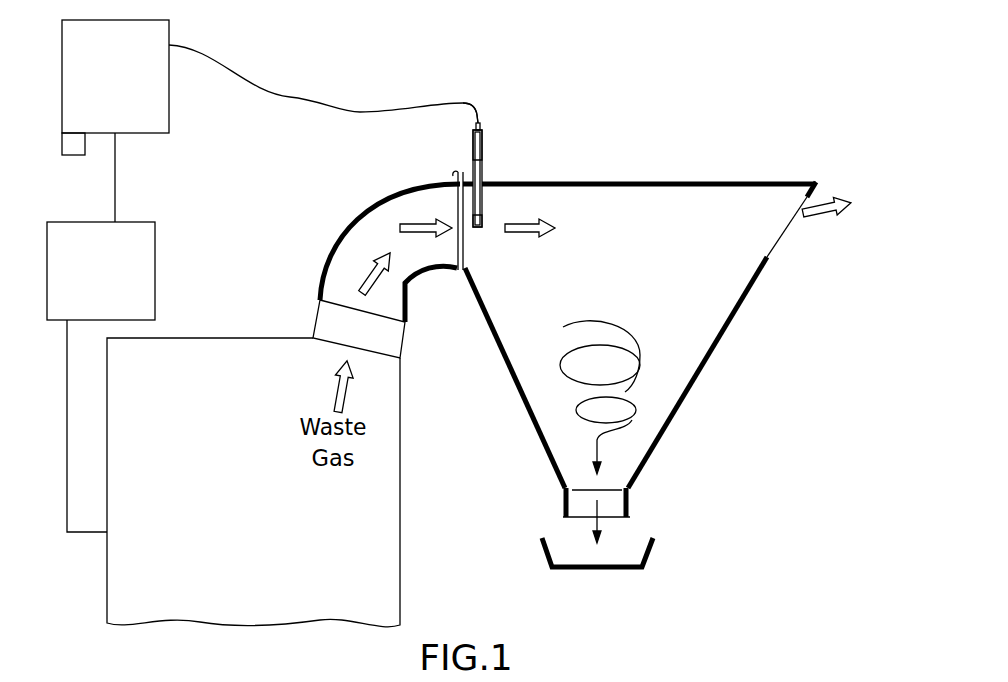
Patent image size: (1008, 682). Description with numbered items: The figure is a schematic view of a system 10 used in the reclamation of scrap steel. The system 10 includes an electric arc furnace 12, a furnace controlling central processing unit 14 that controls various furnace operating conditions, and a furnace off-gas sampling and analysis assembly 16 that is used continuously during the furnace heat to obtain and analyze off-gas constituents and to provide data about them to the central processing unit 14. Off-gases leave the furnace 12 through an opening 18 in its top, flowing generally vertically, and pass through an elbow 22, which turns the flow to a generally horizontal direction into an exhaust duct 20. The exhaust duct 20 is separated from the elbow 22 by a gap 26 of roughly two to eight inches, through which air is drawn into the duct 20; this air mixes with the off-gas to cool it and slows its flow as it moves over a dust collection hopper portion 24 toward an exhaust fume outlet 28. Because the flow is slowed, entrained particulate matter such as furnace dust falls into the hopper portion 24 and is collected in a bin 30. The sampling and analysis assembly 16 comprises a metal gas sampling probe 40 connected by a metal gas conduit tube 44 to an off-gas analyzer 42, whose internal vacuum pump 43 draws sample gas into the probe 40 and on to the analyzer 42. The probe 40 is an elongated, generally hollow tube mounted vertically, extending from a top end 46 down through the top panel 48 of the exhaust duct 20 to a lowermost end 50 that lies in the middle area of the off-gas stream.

The system 10 is at (820, 412).
The electric arc furnace 12 is at (232, 562).
The furnace controlling central processing unit 14 is at (101, 332).
The furnace off-gas sampling and analysis assembly 16 is at (296, 90).
The opening 18 is at (327, 343).
The exhaust duct 20 is at (581, 295).
The elbow 22 is at (370, 233).
The dust collection hopper portion 24 is at (687, 403).
The gap 26 is at (463, 273).
The exhaust fume outlet 28 is at (785, 237).
The bin 30 is at (653, 553).
The gas sampling probe 40 is at (497, 154).
The off-gas analyzer 42 is at (115, 76).
The internal vacuum pump 43 is at (68, 155).
The metal gas conduit tube 44 is at (477, 102).
The top end 46 is at (472, 135).
The top panel 48 is at (610, 180).
The lowermost end 50 is at (483, 227).